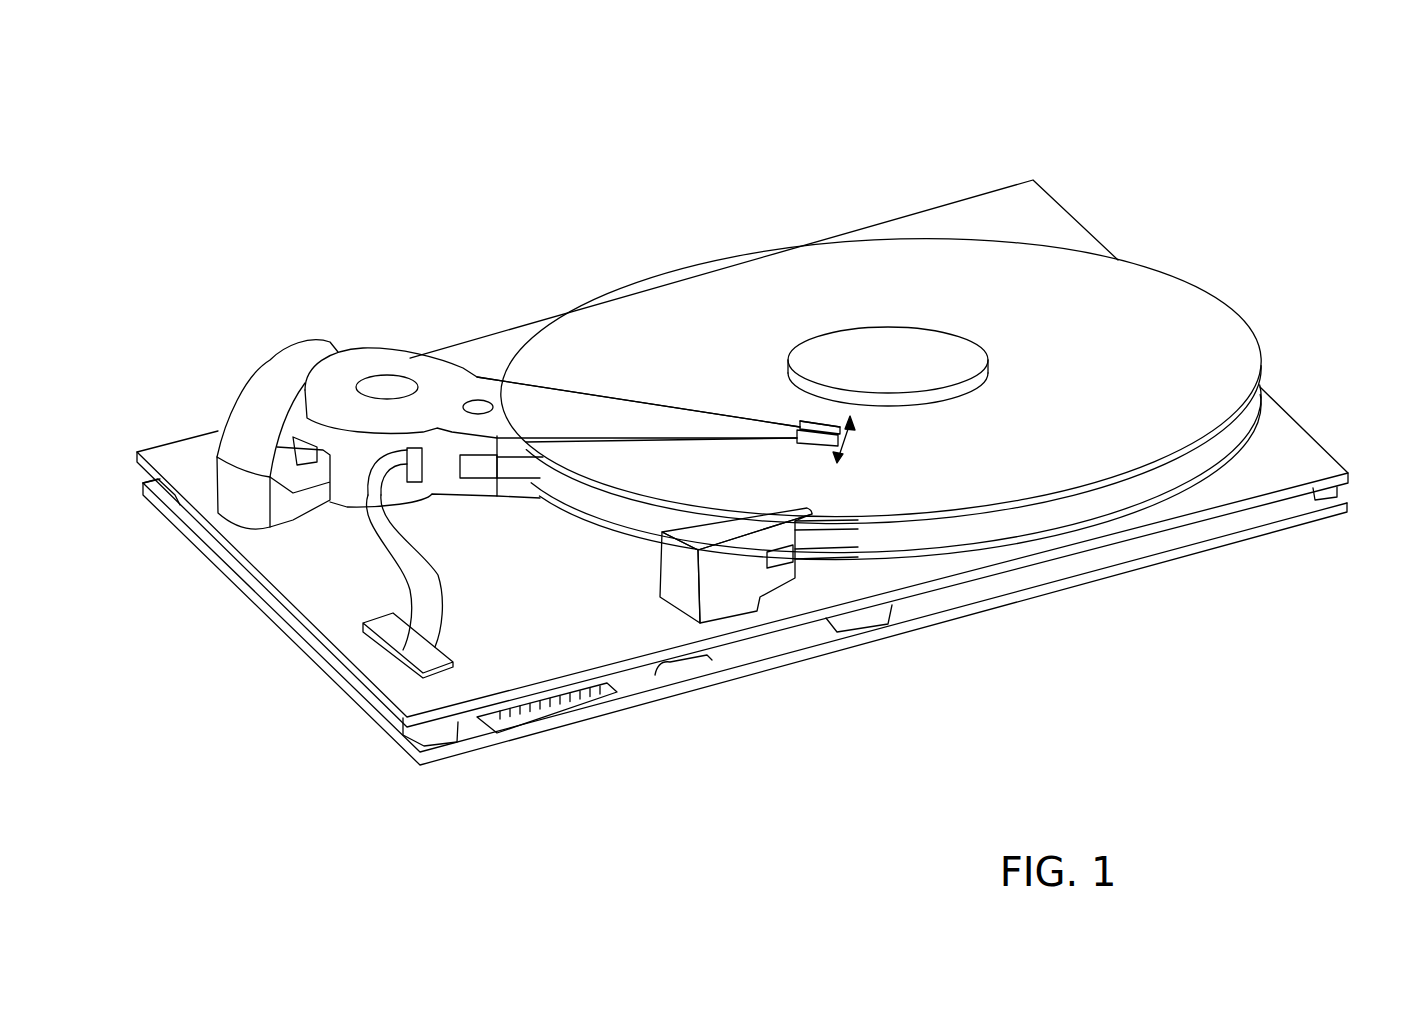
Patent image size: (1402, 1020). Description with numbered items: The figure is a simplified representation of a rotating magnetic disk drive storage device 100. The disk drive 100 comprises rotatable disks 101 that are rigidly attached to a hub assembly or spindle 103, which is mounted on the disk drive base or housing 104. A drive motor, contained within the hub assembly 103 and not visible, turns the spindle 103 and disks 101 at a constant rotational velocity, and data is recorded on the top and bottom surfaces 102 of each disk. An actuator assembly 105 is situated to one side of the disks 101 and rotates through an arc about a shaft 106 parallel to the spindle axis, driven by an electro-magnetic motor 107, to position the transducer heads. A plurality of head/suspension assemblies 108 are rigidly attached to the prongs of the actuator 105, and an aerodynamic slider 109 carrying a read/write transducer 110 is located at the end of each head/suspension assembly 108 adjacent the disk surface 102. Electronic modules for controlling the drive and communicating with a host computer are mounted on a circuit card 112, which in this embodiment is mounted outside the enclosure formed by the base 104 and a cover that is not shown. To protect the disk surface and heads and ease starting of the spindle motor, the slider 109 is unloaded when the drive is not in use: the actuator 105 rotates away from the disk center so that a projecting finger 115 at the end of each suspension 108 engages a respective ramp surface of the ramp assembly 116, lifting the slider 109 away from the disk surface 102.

The rotating magnetic disk drive storage device 100 is at (1110, 174).
The rotatable disks 101 is at (1203, 477).
The disk surfaces 102 is at (830, 263).
The hub assembly or spindle 103 is at (920, 352).
The disk drive base or housing 104 is at (1283, 422).
The actuator assembly 105 is at (410, 358).
The shaft 106 is at (385, 386).
The electro-magnetic motor 107 is at (222, 428).
The head/suspension assemblies 108 is at (557, 408).
The aerodynamic slider 109 is at (820, 447).
The read/write transducer 110 is at (843, 447).
The circuit card 112 is at (768, 672).
The projecting finger 115 is at (840, 433).
The ramp assembly 116 is at (755, 590).